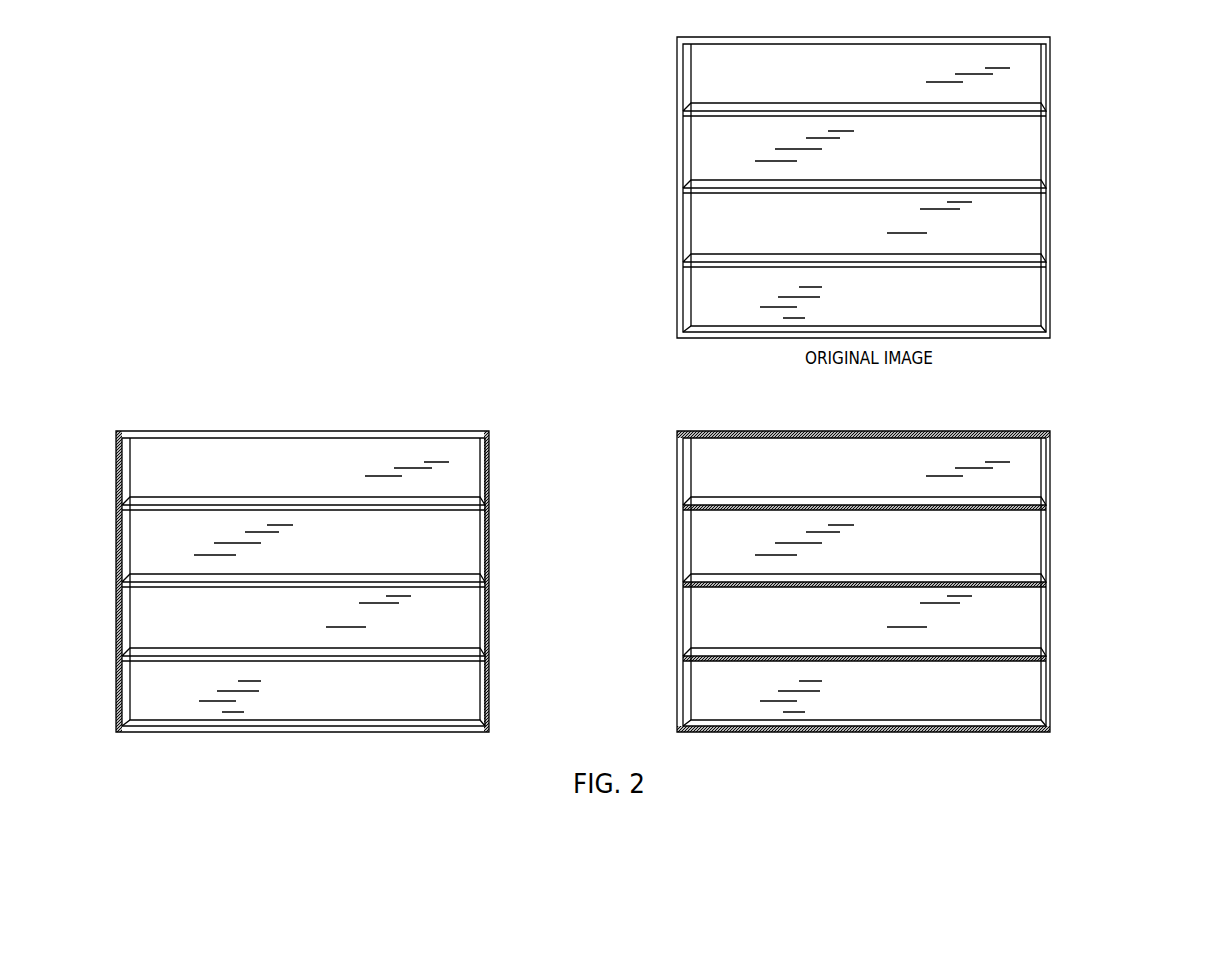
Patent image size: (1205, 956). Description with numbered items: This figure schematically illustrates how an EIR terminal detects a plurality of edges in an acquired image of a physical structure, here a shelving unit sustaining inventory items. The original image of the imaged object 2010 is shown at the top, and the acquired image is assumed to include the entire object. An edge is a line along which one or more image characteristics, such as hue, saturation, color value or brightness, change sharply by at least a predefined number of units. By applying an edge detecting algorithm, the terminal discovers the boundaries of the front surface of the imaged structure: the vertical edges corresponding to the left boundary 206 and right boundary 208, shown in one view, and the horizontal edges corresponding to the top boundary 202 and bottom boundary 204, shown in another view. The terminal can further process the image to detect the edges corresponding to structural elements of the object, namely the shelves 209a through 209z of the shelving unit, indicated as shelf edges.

The imaged object 2010 is at (677, 105).
The left boundary 206 is at (132, 475).
The right boundary 208 is at (471, 478).
The top boundary 202 is at (668, 426).
The bottom boundary 204 is at (675, 714).
The shelf 209a is at (1055, 594).
The shelf 209z is at (1059, 666).